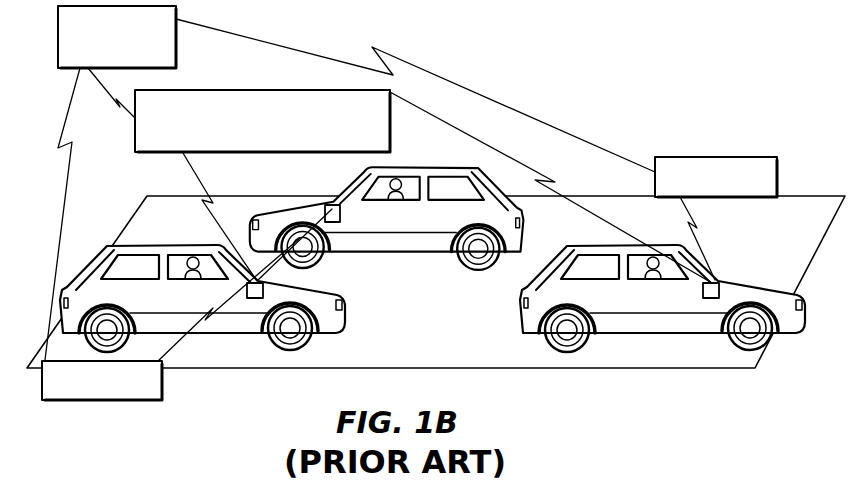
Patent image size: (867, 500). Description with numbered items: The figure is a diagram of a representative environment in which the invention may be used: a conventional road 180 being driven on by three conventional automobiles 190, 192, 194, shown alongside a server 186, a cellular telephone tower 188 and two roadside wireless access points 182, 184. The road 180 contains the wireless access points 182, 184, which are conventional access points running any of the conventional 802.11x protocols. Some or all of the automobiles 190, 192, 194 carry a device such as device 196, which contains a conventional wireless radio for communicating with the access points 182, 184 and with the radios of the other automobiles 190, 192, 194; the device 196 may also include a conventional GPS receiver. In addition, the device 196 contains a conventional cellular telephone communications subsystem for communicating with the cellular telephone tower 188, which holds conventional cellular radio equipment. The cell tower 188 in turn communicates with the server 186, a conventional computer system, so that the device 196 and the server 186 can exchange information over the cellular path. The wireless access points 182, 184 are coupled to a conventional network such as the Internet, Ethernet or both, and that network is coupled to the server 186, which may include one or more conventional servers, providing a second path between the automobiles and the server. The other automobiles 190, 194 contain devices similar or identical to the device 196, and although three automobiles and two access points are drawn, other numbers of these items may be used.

The road 180 is at (493, 361).
The wireless access point 182 is at (144, 392).
The wireless access point 184 is at (760, 190).
The server 186 is at (99, 62).
The cellular telephone tower 188 is at (245, 147).
The automobile 190 is at (409, 215).
The automobile 192 is at (183, 293).
The automobile 194 is at (640, 293).
The device 196 is at (466, 282).